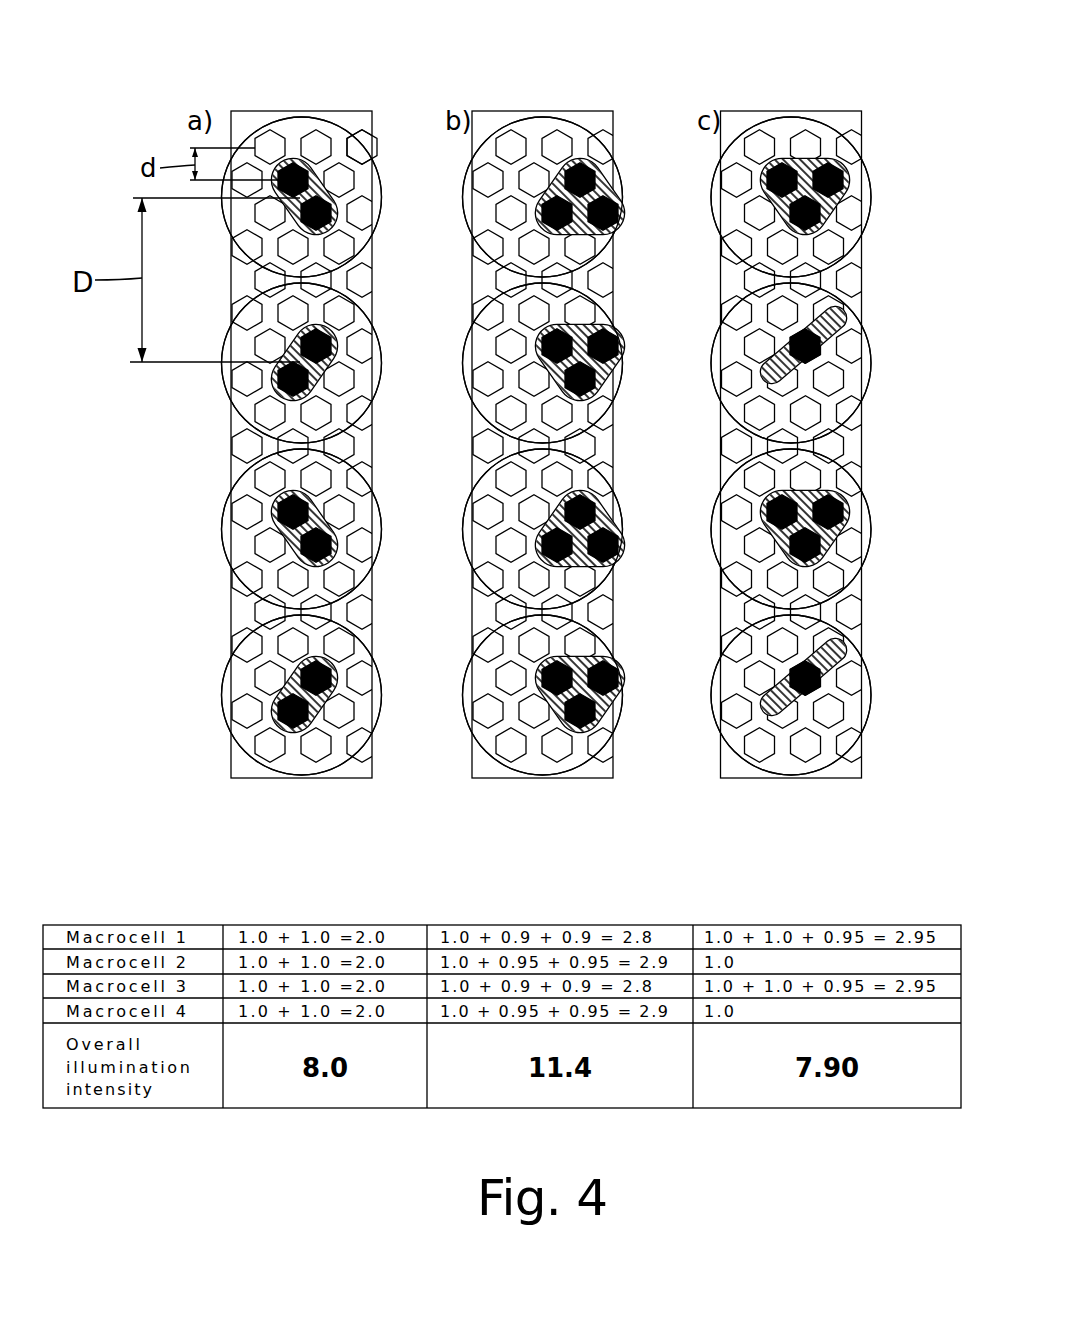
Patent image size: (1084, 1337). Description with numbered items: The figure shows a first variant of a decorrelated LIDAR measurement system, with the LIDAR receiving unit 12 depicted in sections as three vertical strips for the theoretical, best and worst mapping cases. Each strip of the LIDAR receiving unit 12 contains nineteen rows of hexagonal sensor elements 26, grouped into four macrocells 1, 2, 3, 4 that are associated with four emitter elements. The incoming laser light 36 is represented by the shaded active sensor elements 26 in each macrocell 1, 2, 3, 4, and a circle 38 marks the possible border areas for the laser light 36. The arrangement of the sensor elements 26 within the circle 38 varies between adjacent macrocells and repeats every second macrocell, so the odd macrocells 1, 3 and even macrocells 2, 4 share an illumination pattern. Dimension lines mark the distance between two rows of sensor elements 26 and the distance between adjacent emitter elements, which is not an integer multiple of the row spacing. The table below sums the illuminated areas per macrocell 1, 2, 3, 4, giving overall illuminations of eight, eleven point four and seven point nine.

The LIDAR receiving unit 12 is at (372, 808).
The sensor element 26 is at (362, 145).
The laser light 36 is at (289, 162).
The circle 38 is at (255, 132).
The macrocell 1 is at (556, 194).
The macrocell 2 is at (556, 363).
The macrocell 3 is at (556, 527).
The macrocell 4 is at (556, 694).